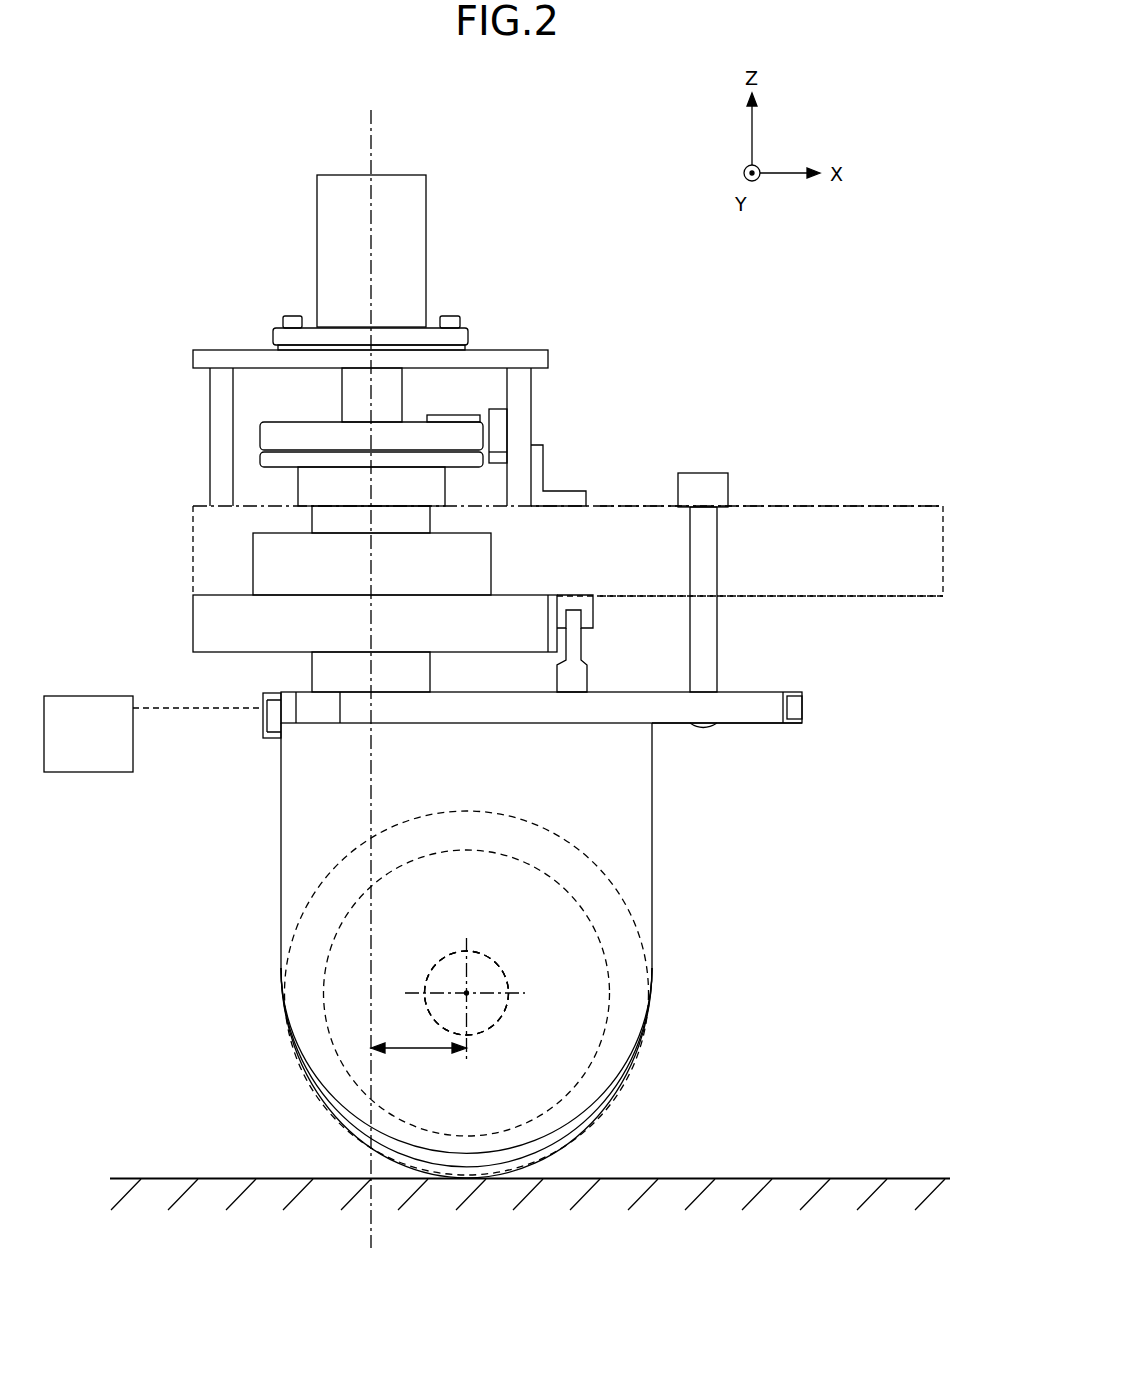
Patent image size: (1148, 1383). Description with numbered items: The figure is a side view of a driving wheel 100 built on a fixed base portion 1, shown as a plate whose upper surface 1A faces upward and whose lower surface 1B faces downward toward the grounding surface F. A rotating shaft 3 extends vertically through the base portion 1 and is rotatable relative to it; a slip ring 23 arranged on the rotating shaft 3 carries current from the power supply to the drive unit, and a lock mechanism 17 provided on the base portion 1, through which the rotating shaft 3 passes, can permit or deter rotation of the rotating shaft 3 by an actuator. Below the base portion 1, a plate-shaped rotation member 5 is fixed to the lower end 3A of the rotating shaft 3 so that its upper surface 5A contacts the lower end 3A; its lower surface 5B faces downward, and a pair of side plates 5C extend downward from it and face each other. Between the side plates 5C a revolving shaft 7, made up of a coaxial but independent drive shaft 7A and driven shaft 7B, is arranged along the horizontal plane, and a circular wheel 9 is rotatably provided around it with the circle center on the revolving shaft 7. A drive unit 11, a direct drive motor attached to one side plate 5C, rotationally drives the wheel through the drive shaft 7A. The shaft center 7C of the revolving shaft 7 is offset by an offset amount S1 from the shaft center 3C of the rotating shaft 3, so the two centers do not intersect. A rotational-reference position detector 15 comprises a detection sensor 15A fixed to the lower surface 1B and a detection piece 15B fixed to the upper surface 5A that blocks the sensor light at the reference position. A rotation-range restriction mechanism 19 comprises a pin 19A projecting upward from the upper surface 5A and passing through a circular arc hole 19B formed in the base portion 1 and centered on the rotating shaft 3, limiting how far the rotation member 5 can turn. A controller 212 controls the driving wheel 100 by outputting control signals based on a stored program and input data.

The driving wheel 100 is at (201, 262).
The base portion 1 is at (943, 530).
The upper surface 1A is at (870, 503).
The lower surface 1B is at (892, 598).
The rotating shaft 3 is at (311, 677).
The lower end 3A is at (340, 700).
The shaft center 3C is at (372, 815).
The rotation member 5 is at (803, 707).
The upper surface 5A is at (777, 692).
The lower surface 5B is at (763, 723).
The side plates 5C is at (642, 795).
The revolving shaft 7 is at (508, 970).
The drive shaft 7A is at (467, 993).
The driven shaft 7B is at (467, 993).
The shaft center 7C is at (466, 993).
The wheel 9 is at (607, 1108).
The drive unit 11 is at (609, 1007).
The rotational-reference position detector 15 is at (700, 382).
The detection sensor 15A is at (593, 613).
The detection piece 15B is at (585, 655).
The lock mechanism 17 is at (207, 630).
The rotation-range restriction mechanism 19 is at (842, 382).
The pin 19A is at (718, 627).
The circular arc hole 19B is at (716, 545).
The slip ring 23 is at (275, 420).
The controller 212 is at (88, 773).
The grounding surface F is at (863, 1177).
The offset amount S1 is at (412, 1052).